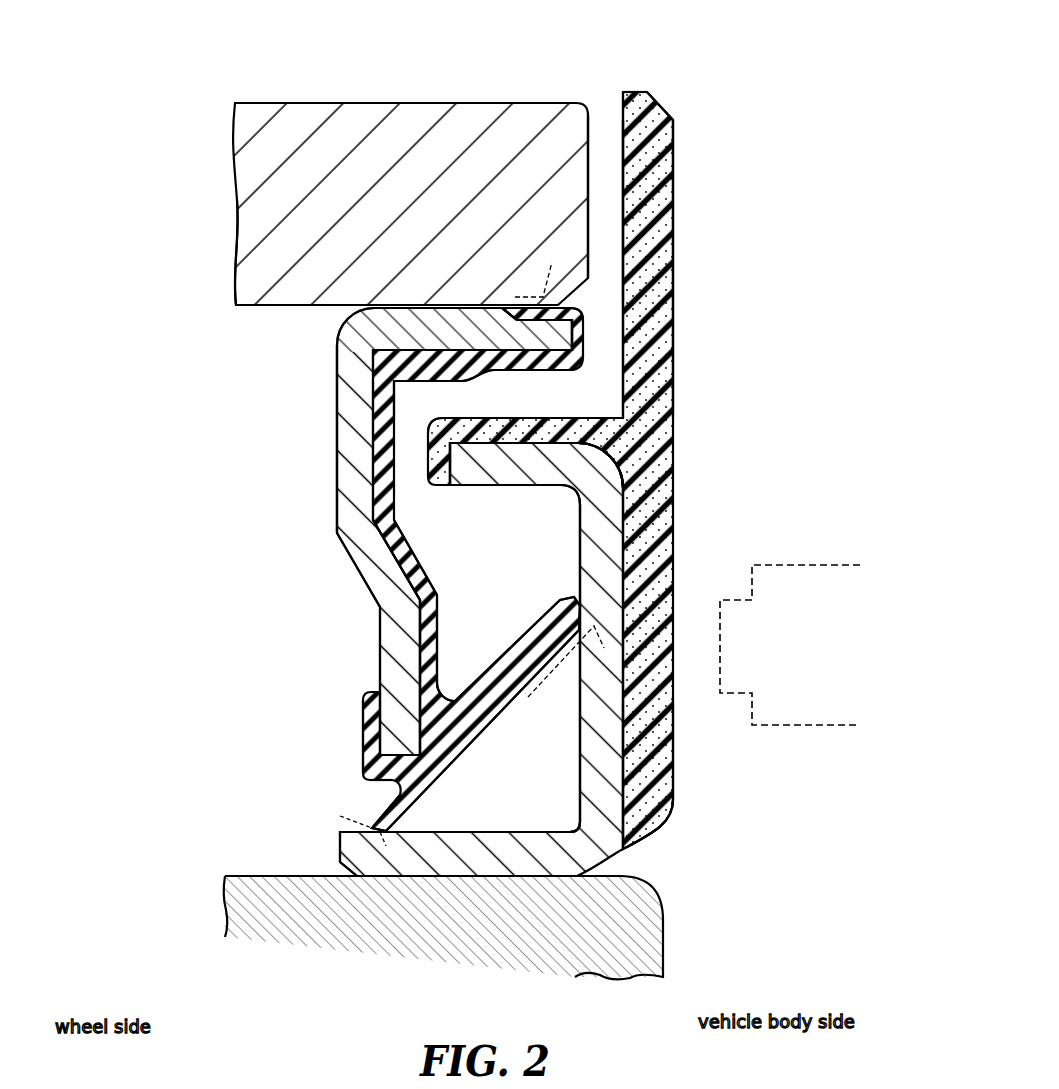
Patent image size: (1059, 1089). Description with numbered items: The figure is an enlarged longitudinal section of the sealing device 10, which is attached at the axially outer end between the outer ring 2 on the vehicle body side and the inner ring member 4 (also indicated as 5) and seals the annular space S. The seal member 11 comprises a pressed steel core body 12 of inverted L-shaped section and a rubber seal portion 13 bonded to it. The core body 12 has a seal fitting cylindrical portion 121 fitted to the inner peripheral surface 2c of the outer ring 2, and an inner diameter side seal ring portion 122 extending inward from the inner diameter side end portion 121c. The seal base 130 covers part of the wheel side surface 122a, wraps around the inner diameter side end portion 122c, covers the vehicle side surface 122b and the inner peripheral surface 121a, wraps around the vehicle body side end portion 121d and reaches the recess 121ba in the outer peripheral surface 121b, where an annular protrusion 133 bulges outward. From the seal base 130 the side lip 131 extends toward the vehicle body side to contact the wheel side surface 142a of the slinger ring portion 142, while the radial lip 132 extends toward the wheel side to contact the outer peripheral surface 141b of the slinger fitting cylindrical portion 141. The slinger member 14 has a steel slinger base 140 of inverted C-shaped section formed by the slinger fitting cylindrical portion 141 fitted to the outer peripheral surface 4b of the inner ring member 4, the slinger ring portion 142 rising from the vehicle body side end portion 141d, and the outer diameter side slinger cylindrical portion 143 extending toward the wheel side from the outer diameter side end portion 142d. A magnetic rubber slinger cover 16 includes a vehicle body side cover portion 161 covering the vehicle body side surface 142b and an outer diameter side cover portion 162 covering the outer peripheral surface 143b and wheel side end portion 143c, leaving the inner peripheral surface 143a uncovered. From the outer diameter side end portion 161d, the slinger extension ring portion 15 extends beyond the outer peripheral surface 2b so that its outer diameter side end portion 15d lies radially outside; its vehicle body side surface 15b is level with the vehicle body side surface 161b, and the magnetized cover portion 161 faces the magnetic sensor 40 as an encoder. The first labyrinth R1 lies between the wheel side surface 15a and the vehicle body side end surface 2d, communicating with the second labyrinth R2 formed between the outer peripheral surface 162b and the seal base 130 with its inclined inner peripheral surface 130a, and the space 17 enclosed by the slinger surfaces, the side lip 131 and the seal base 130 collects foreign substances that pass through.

The outer ring 2 is at (283, 120).
The outer peripheral surface of the outer ring 2b is at (427, 103).
The inner peripheral surface of the outer ring 2c is at (238, 307).
The vehicle body side end surface of the outer ring 2d is at (582, 238).
The inner ring member 4 is at (470, 901).
The knuckle 5 is at (642, 943).
The outer peripheral surface of the inner ring member 4b is at (240, 876).
The sealing device 10 is at (733, 80).
The seal member 11 is at (272, 377).
The core body 12 is at (335, 372).
The seal fitting cylindrical portion 121 is at (465, 325).
The inner peripheral surface of the seal fitting cylindrical portion 121a is at (480, 376).
The outer peripheral surface of the seal fitting cylindrical portion 121b is at (412, 307).
The recess 121ba is at (509, 308).
The inner diameter side end portion of the seal fitting cylindrical portion 121c is at (358, 337).
The vehicle body side end portion of the seal fitting cylindrical portion 121d is at (575, 340).
The inner diameter side seal ring portion 122 is at (357, 548).
The wheel side surface of the inner diameter side seal ring portion 122a is at (362, 730).
The vehicle side surface of the inner diameter side seal ring portion 122b is at (427, 630).
The inner diameter side end portion of the inner diameter side seal ring portion 122c is at (365, 778).
The seal portion 13 is at (373, 458).
The seal base 130 is at (390, 588).
The inclined inner peripheral surface 130a is at (377, 373).
The side lip 131 is at (532, 652).
The radial lip 132 is at (373, 823).
The annular protrusion 133 is at (543, 293).
The slinger member 14 is at (752, 467).
The slinger base 140 is at (628, 497).
The slinger extension ring portion 15 is at (657, 307).
The wheel side surface of the slinger extension ring portion 15a is at (633, 197).
The vehicle body side surface of the slinger extension ring portion 15b is at (673, 165).
The outer diameter side end portion of the slinger extension ring portion 15d is at (635, 92).
The slinger cover 16 is at (675, 535).
The slinger fitting cylindrical portion 141 is at (473, 843).
The outer peripheral surface of the slinger fitting cylindrical portion 141b is at (437, 835).
The vehicle body side end portion of the slinger fitting cylindrical portion 141d is at (577, 827).
The slinger ring portion 142 is at (598, 715).
The wheel side surface of the slinger ring portion 142a is at (580, 733).
The vehicle body side surface of the slinger ring portion 142b is at (628, 583).
The outer diameter side end portion of the slinger ring portion 142d is at (590, 482).
The outer diameter side slinger cylindrical portion 143 is at (475, 462).
The inner peripheral surface of the outer diameter side slinger cylindrical portion 143a is at (497, 487).
The outer peripheral surface of the outer diameter side slinger cylindrical portion 143b is at (477, 443).
The wheel side end portion of the outer diameter side slinger cylindrical portion 143c is at (433, 461).
The vehicle body side cover portion 161 is at (648, 787).
The vehicle body side surface of the vehicle body side cover portion 161b is at (673, 807).
The outer diameter side end portion of the vehicle body side cover portion 161d is at (643, 437).
The outer diameter side cover portion 162 is at (510, 433).
The outer peripheral surface of the outer diameter side cover portion 162b is at (537, 417).
The space 17 is at (493, 586).
The magnetic sensor 40 is at (860, 728).
The annular space S is at (214, 597).
The first labyrinth R1 is at (608, 127).
The second labyrinth R2 is at (527, 407).